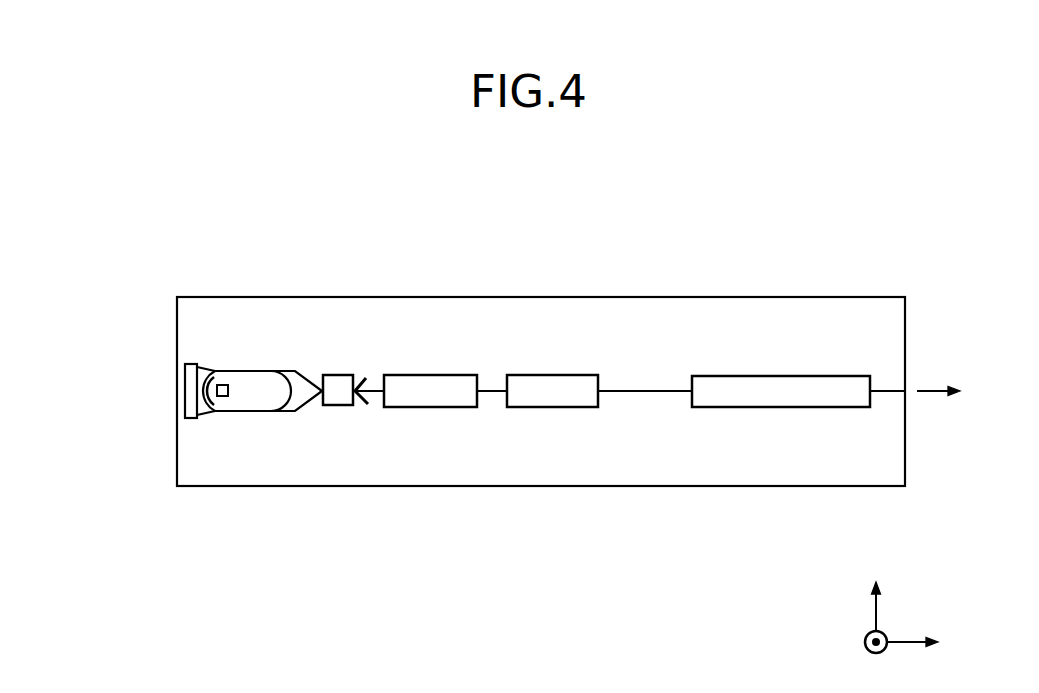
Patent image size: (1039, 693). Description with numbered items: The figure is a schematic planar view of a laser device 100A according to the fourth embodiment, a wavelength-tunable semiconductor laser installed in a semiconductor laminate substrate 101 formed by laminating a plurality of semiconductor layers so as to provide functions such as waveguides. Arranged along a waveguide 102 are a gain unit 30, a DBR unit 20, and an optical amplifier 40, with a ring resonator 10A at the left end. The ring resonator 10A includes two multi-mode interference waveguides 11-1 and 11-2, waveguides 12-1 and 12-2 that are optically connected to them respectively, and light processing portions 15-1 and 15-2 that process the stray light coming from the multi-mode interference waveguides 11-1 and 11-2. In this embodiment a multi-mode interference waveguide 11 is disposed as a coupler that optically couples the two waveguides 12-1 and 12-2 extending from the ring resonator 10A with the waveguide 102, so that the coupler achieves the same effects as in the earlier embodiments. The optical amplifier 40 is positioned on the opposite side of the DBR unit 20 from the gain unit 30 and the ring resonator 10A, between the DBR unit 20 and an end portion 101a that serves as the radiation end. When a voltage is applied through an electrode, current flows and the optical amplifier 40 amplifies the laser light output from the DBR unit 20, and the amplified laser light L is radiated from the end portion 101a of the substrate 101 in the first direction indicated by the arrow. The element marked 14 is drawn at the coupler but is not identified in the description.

The laser device 100A is at (874, 292).
The semiconductor laminate substrate 101 is at (886, 467).
The end portion 101a is at (905, 391).
The ring resonator 10A is at (223, 357).
The multi-mode interference waveguide 11 is at (345, 372).
The multi-mode interference waveguide 11-1 is at (252, 366).
The multi-mode interference waveguide 11-2 is at (262, 419).
The waveguide 12-1 is at (308, 371).
The waveguide 12-2 is at (308, 410).
The reflecting element 14 is at (367, 377).
The light processing portion 15-1 is at (224, 402).
The light processing portion 15-2 is at (178, 385).
The waveguide 102 is at (372, 398).
The DBR unit 20 is at (553, 372).
The gain unit 30 is at (431, 372).
The optical amplifier 40 is at (780, 373).